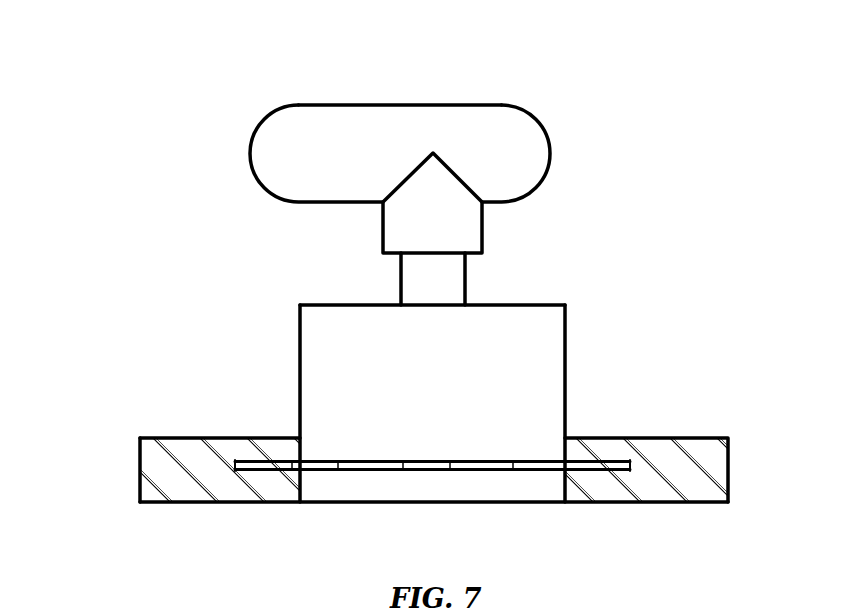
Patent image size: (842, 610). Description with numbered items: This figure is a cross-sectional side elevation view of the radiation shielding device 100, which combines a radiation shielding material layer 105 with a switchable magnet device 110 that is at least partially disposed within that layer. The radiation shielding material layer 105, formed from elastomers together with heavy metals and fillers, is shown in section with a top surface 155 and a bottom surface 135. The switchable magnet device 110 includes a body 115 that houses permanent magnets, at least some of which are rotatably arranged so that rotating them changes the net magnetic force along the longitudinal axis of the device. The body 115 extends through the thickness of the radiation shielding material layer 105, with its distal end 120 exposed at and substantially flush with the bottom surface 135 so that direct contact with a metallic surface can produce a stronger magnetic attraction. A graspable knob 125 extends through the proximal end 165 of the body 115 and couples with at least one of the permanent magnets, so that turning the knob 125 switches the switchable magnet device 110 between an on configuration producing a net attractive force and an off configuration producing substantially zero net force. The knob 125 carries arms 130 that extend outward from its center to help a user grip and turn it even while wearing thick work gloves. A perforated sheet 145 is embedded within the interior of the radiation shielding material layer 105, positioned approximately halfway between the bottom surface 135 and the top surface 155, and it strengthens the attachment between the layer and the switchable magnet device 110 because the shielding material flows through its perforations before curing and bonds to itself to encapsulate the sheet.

The radiation shielding device 100 is at (128, 102).
The radiation shielding material layer 105 is at (140, 470).
The switchable magnet device 110 is at (565, 213).
The body 115 is at (565, 332).
The distal end 120 is at (503, 503).
The knob 125 is at (433, 105).
The arms 130 is at (253, 135).
The bottom surface 135 is at (693, 503).
The perforated sheet 145 is at (393, 471).
The top surface 155 is at (263, 436).
The proximal end 165 is at (505, 305).